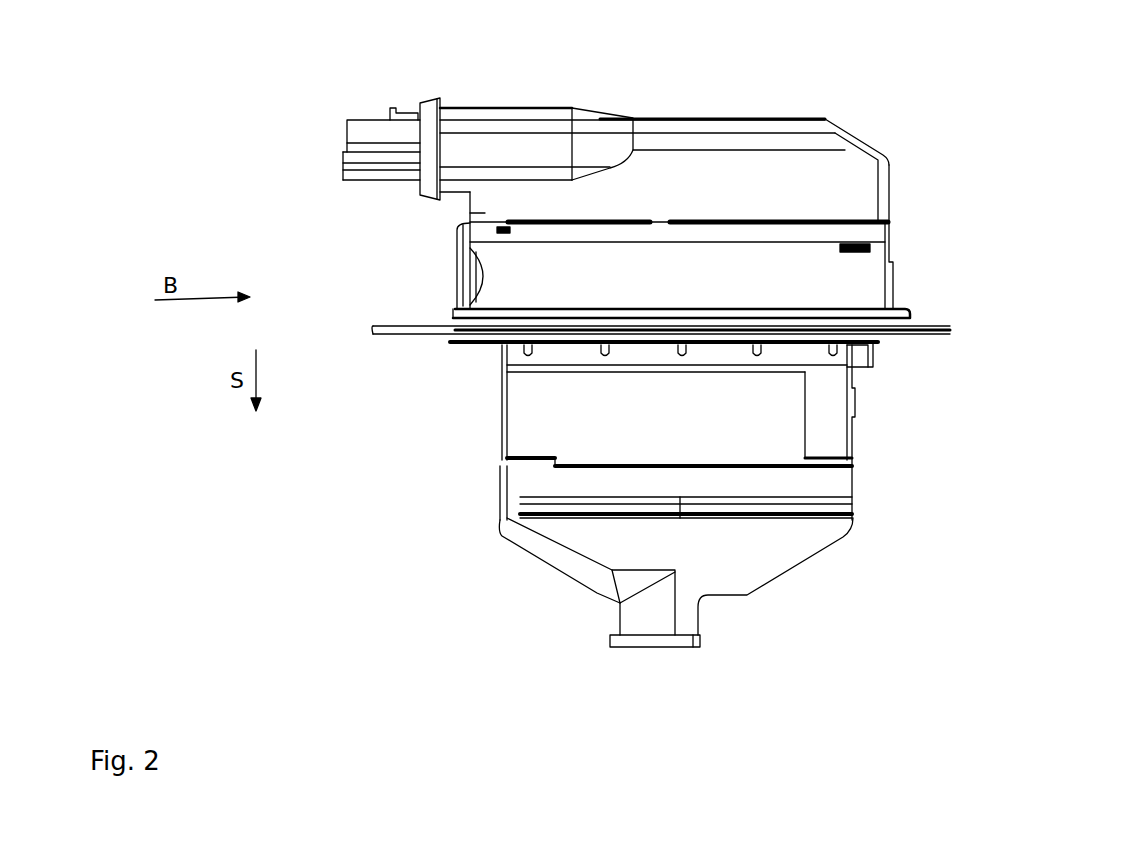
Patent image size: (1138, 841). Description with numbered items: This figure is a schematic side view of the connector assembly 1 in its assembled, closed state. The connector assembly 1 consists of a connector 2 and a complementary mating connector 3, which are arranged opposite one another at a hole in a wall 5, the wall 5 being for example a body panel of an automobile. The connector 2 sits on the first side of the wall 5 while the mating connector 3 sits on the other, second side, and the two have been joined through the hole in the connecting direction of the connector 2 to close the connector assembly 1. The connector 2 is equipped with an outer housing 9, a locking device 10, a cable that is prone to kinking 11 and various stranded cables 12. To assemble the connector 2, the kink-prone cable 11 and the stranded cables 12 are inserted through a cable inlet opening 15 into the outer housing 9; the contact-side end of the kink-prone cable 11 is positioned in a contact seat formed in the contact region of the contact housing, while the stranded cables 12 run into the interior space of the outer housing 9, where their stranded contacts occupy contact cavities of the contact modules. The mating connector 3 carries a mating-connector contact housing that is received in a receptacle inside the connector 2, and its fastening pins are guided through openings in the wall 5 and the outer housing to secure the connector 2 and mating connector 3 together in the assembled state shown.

The connector assembly 1 is at (1075, 195).
The connector 2 is at (950, 202).
The mating connector 3 is at (938, 392).
The wall 5 is at (372, 330).
The outer housing 9 is at (813, 177).
The locking device 10 is at (452, 270).
The cable that is prone to kinking 11 is at (360, 127).
The stranded cables 12 is at (343, 172).
The cable inlet opening 15 is at (410, 103).